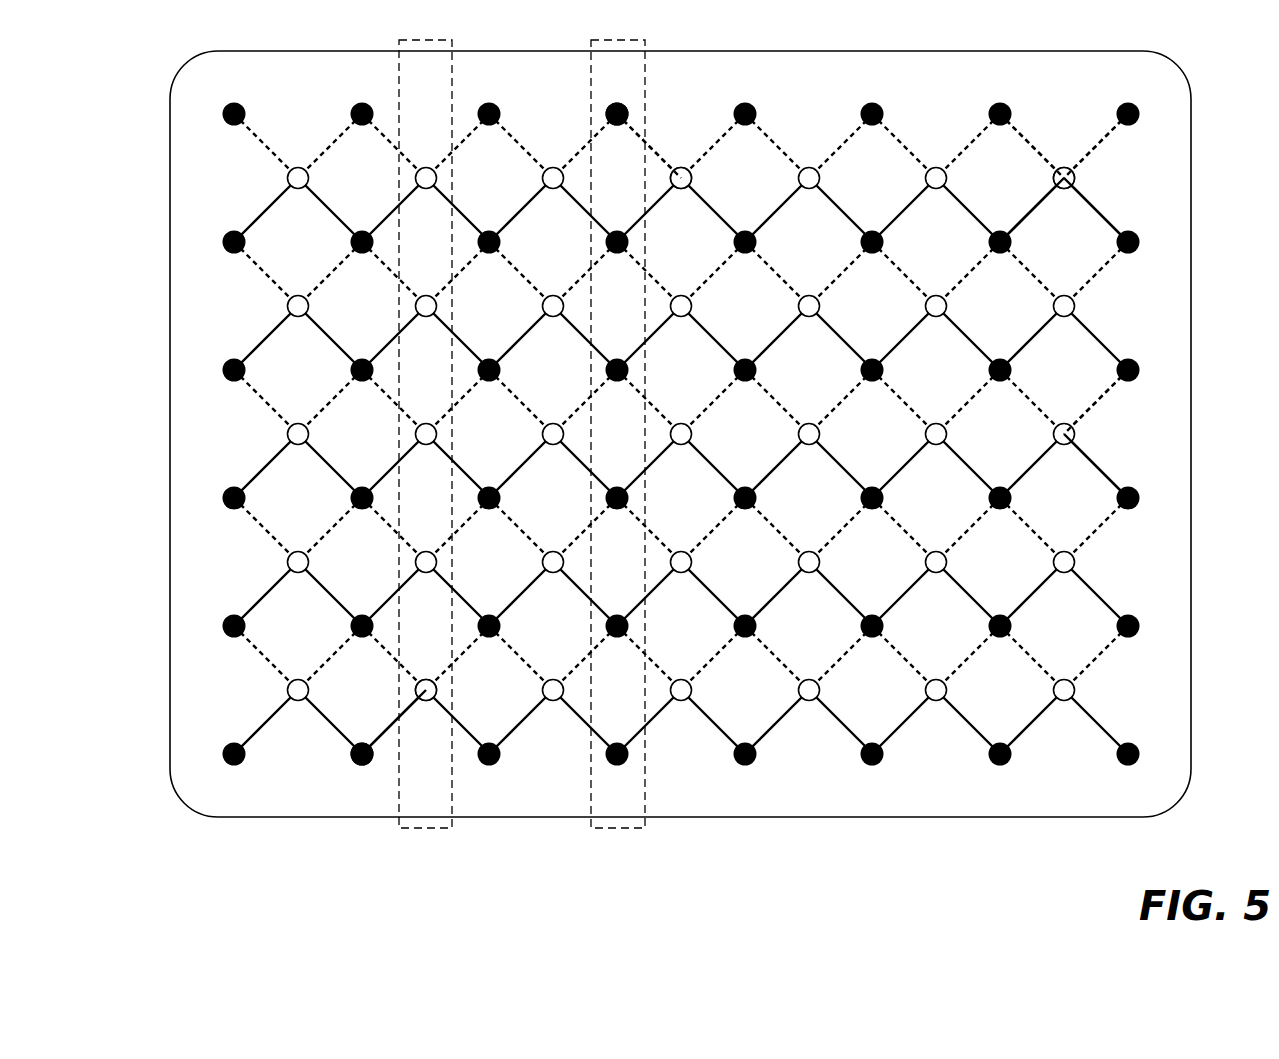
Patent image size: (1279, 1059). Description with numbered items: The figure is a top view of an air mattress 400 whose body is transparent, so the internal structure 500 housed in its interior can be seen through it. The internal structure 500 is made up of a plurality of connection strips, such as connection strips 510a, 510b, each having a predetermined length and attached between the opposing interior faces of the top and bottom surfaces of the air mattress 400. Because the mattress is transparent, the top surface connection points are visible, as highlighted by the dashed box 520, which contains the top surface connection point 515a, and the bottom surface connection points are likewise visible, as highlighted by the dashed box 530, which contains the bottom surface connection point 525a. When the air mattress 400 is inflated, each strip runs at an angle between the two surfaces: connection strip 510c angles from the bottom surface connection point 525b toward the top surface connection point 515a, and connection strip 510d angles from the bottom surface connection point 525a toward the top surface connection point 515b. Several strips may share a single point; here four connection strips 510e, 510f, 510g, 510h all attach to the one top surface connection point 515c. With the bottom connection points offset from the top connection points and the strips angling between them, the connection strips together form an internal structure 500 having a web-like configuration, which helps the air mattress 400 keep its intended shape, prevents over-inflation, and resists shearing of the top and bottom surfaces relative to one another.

The air mattress 400 is at (133, 70).
The internal structure 500 is at (1098, 684).
The connection strip 510a is at (1108, 389).
The connection strip 510b is at (1108, 475).
The connection strip 510c is at (396, 725).
The connection strip 510d is at (645, 145).
The connection strip 510e is at (1018, 225).
The connection strip 510f is at (1022, 135).
The connection strip 510g is at (1105, 133).
The connection strip 510h is at (1080, 198).
The top surface connection point 515a is at (431, 700).
The top surface connection point 515b is at (683, 167).
The top surface connection point 515c is at (1064, 167).
The dashed box 520 is at (398, 78).
The bottom surface connection point 525a is at (617, 103).
The bottom surface connection point 525b is at (362, 766).
The dashed box 530 is at (590, 78).